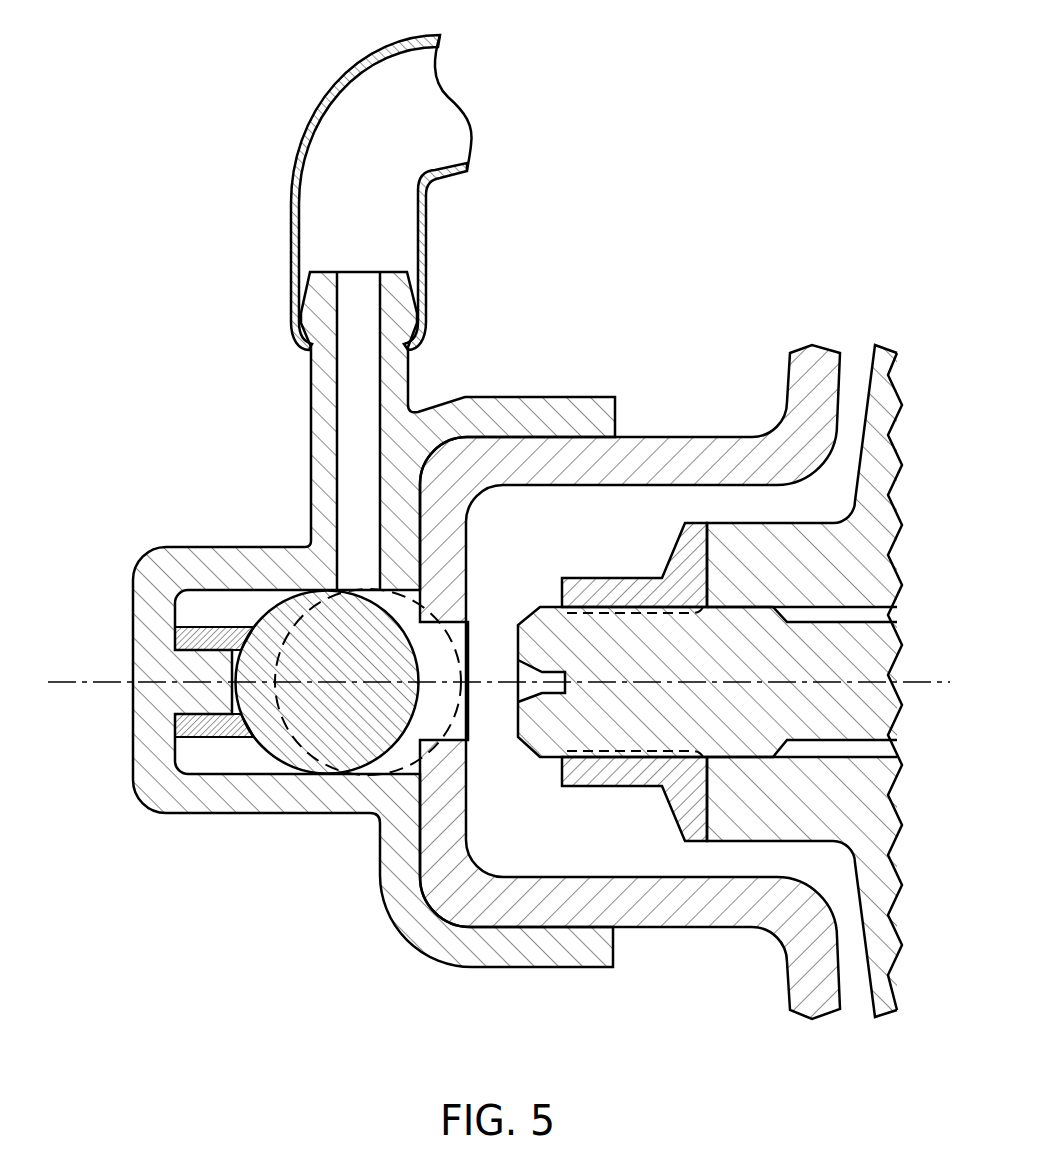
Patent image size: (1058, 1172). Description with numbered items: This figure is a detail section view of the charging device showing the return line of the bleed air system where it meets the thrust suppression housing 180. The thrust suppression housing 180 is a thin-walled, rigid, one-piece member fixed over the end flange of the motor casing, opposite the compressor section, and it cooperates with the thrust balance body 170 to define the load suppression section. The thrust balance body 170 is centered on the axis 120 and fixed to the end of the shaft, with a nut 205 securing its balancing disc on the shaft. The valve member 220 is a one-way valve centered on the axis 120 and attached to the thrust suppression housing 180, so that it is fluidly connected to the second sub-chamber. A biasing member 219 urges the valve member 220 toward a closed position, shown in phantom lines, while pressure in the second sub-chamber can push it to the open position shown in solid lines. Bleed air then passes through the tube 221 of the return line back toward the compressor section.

The axis 120 is at (90, 680).
The thrust balance body 170 is at (880, 785).
The thrust suppression housing 180 is at (668, 437).
The nut 205 is at (607, 770).
The biasing member 219 is at (183, 637).
The valve member 220 is at (240, 470).
The tube 221 is at (292, 228).